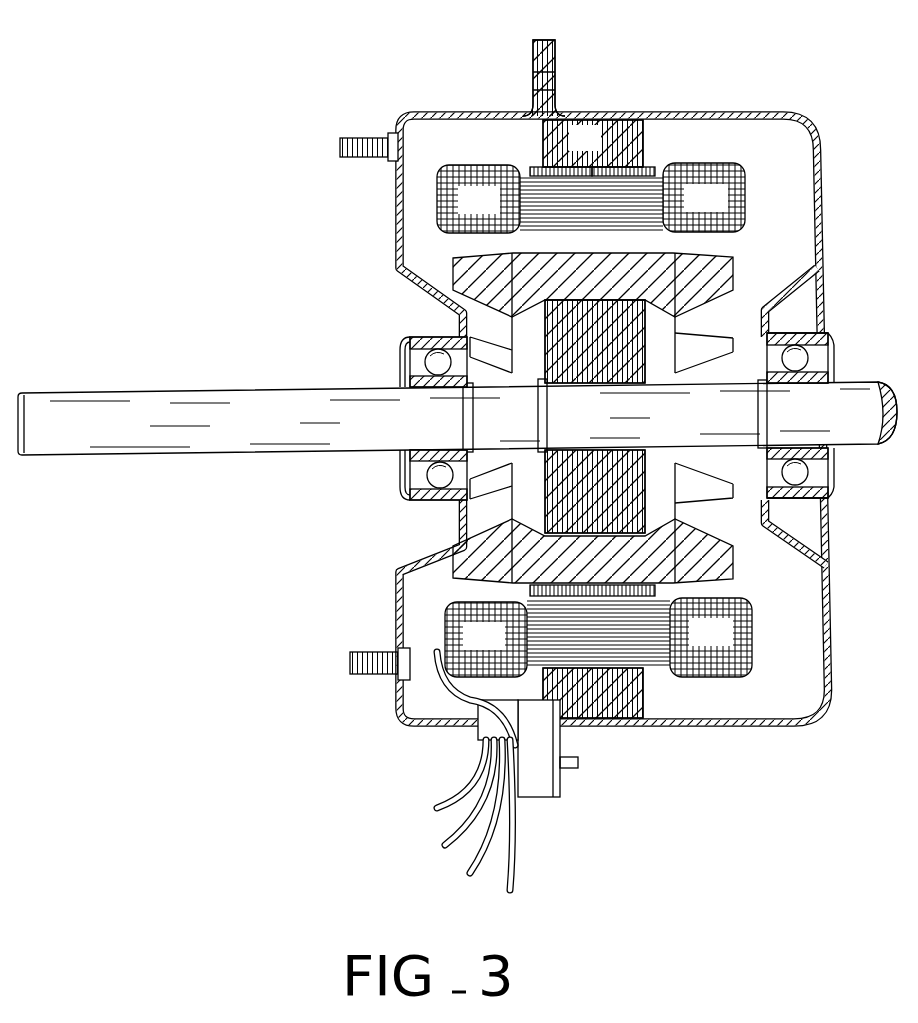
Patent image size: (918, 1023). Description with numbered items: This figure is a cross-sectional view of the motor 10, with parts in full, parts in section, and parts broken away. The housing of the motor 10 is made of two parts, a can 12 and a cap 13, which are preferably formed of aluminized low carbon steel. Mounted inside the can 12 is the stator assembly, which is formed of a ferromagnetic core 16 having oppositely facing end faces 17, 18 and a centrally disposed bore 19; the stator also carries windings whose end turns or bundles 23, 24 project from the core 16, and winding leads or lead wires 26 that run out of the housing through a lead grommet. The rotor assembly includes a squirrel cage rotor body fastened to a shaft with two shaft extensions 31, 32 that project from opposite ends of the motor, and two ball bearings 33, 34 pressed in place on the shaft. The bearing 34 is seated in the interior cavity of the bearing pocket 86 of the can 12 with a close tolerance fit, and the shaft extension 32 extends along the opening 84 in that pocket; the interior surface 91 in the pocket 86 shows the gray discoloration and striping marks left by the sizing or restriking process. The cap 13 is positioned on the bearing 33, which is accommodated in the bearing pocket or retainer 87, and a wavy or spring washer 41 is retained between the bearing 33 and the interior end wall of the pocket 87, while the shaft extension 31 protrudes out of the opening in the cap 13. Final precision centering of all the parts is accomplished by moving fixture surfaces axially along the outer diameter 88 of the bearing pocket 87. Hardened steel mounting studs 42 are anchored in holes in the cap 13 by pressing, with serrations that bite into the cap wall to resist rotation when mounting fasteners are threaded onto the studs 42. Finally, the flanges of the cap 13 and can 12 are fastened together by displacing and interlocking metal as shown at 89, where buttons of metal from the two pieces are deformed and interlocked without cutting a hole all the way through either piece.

The motor 10 is at (657, 103).
The can 12 is at (772, 105).
The cap 13 is at (452, 108).
The ferromagnetic core 16 is at (600, 150).
The end face 17 is at (545, 141).
The end face 18 is at (641, 148).
The bore 19 is at (655, 597).
The winding end turns 23 is at (499, 215).
The winding end turns 24 is at (726, 213).
The lead wires 26 is at (476, 797).
The shaft extension 31 is at (77, 432).
The shaft extension 32 is at (862, 393).
The ball bearing 33 is at (442, 458).
The ball bearing 34 is at (793, 462).
The wavy washer 41 is at (403, 378).
The mounting studs 42 is at (372, 138).
The opening 84 is at (837, 398).
The bearing pocket 86 is at (797, 330).
The bearing pocket 87 is at (437, 336).
The outer diameter 88 is at (410, 522).
The interlocked metal 89 is at (543, 62).
The interior surface 91 is at (783, 486).